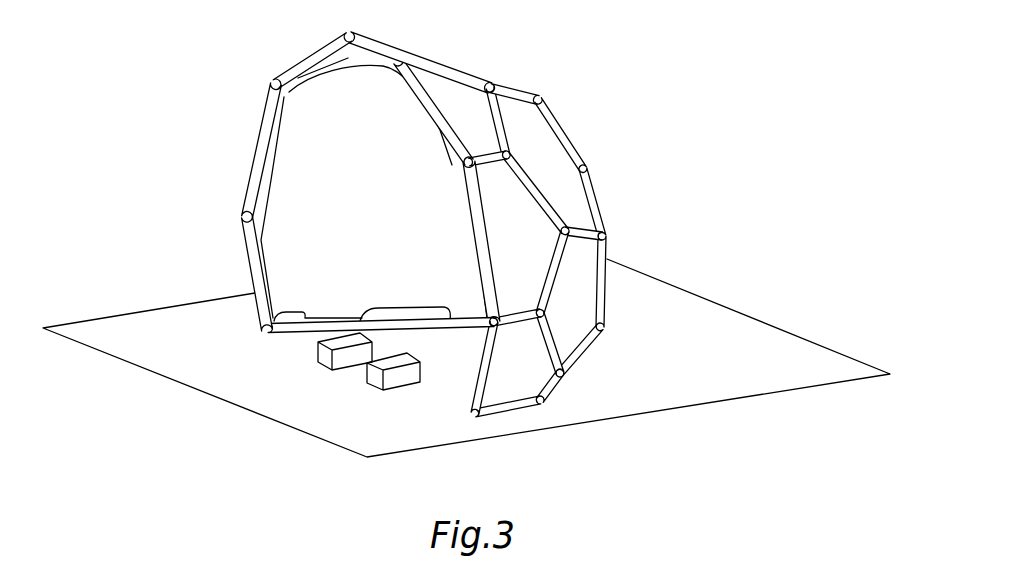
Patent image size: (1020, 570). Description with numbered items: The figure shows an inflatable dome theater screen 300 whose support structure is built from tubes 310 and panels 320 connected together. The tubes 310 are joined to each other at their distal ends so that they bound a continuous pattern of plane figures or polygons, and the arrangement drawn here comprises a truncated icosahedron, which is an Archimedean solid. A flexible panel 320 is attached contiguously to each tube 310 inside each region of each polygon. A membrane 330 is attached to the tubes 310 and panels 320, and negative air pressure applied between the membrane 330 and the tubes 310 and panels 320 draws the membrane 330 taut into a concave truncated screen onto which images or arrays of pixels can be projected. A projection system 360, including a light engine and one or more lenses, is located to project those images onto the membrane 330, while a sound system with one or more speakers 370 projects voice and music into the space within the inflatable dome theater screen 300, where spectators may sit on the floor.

The inflatable dome theater screen 300 is at (648, 53).
The tubes 310 is at (452, 60).
The panels 320 is at (547, 160).
The membrane 330 is at (270, 104).
The projection system 360 is at (318, 357).
The speakers 370 is at (408, 386).